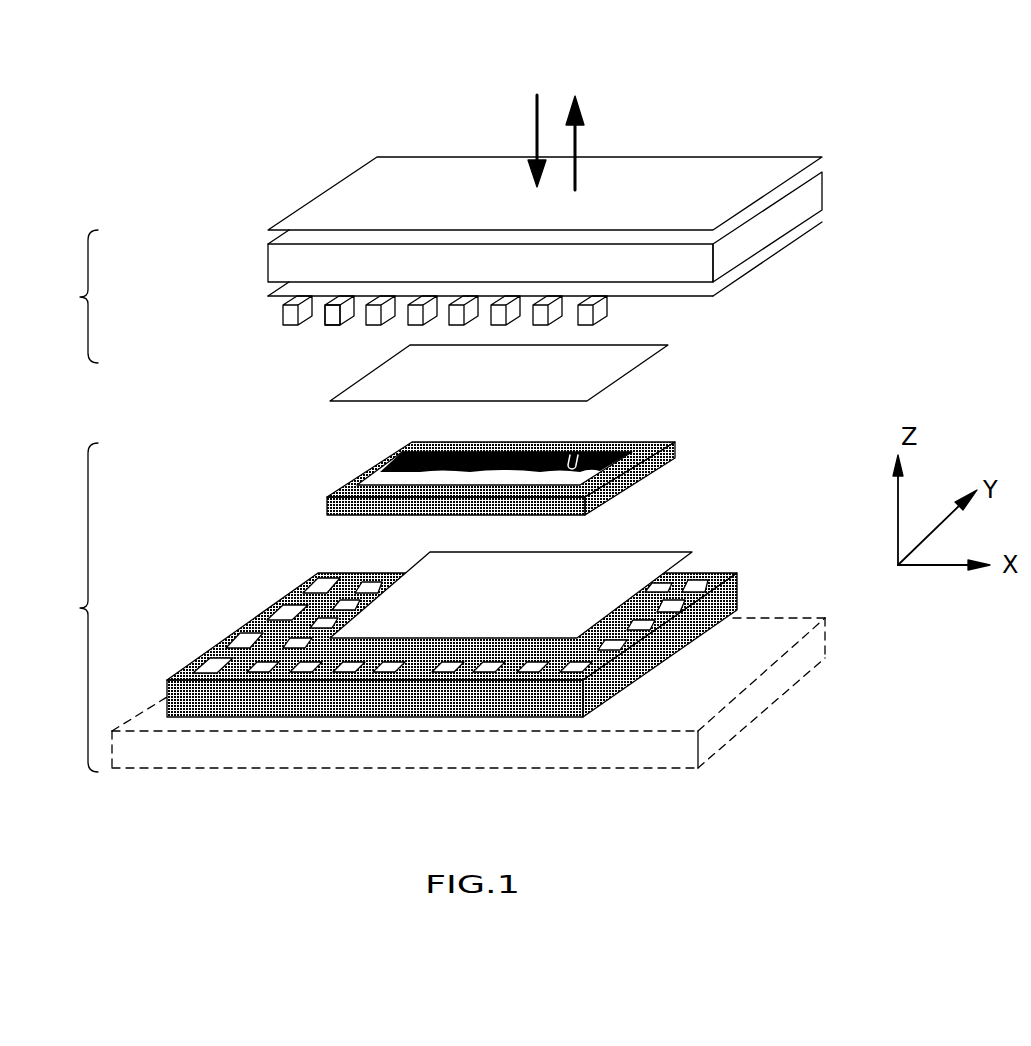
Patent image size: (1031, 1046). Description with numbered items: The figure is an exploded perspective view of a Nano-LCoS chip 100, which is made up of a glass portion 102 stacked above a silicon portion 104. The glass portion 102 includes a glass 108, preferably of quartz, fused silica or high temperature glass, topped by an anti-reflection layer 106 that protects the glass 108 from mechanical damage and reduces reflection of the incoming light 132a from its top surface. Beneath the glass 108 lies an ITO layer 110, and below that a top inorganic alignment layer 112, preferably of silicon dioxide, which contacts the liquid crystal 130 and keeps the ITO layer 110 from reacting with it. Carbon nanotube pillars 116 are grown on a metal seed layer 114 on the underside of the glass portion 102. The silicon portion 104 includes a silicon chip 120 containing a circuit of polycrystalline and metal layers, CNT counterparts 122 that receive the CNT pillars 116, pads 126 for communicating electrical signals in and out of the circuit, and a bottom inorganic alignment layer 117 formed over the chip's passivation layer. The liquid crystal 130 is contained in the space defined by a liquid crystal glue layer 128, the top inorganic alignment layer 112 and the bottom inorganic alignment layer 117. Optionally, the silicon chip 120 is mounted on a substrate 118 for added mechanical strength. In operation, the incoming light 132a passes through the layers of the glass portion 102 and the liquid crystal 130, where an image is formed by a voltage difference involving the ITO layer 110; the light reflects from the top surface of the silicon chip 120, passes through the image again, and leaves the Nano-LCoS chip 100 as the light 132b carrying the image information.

The Nano-LCoS chip 100 is at (382, 115).
The glass portion 102 is at (71, 296).
The silicon portion 104 is at (70, 607).
The anti-reflection (AR) layer 106 is at (738, 157).
The glass 108 is at (268, 244).
The Indium Tin Oxide (ITO) layer 110 is at (268, 296).
The top inorganic alignment layer 112 is at (655, 352).
The metal seed layer 114 is at (287, 300).
The carbon nanotube (CNT) pillars 116 is at (327, 328).
The bottom inorganic alignment layer 117 is at (428, 553).
The substrate 118 is at (513, 769).
The silicon chip 120 is at (180, 679).
The CNT counterparts 122 is at (267, 663).
The pads 126 is at (238, 645).
The liquid crystal glue layer 128 is at (668, 443).
The liquid crystal 130 is at (582, 447).
The incoming light 132a is at (536, 140).
The light carrying the information of the image 132b is at (577, 138).